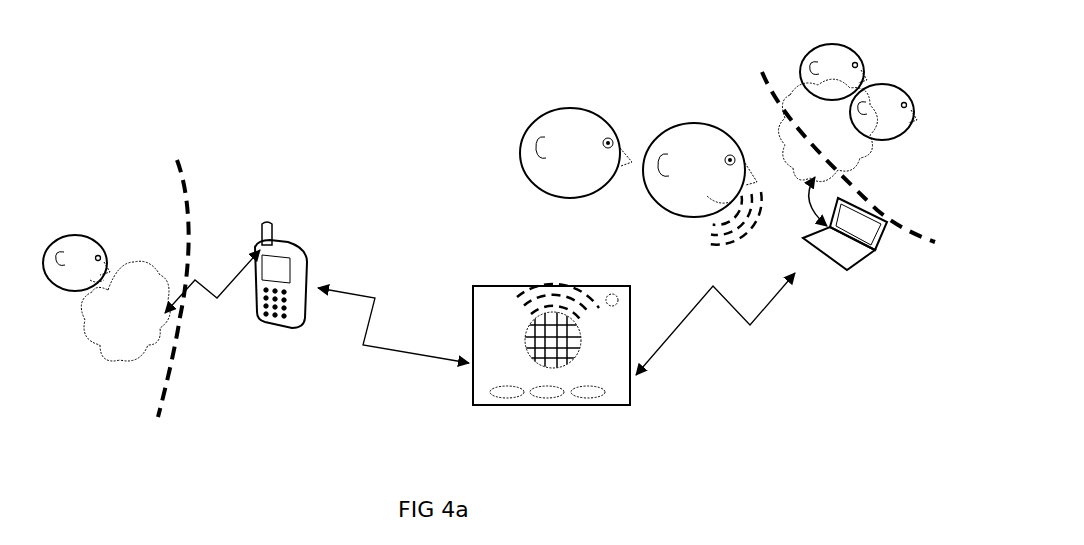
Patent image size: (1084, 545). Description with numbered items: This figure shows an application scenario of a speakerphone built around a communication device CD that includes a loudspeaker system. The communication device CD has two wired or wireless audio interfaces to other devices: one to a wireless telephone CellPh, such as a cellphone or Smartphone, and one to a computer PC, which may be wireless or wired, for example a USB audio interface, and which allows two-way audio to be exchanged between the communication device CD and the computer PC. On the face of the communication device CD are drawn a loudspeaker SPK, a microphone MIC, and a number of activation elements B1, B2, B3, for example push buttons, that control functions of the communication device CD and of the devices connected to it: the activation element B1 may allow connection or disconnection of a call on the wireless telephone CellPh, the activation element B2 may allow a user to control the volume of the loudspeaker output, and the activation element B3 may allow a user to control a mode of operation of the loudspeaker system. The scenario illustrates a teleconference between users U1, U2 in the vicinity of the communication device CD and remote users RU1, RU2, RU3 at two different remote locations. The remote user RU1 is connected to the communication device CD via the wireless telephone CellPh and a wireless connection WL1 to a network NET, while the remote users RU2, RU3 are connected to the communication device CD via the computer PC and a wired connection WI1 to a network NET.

The remote user RU1 is at (104, 241).
The network NET is at (479, 220).
The wireless connection WL1 is at (212, 285).
The wireless telephone CellPh is at (288, 275).
The communication device CD is at (551, 361).
The speaker SPK is at (545, 343).
The microphone MIC is at (608, 306).
The activation element B1 is at (509, 392).
The activation element B2 is at (549, 392).
The activation element B3 is at (590, 392).
The user U1 is at (722, 143).
The user U2 is at (600, 126).
The remote user RU2 is at (852, 52).
The remote user RU3 is at (905, 92).
The wired connection WI1 is at (804, 201).
The computer PC is at (833, 234).